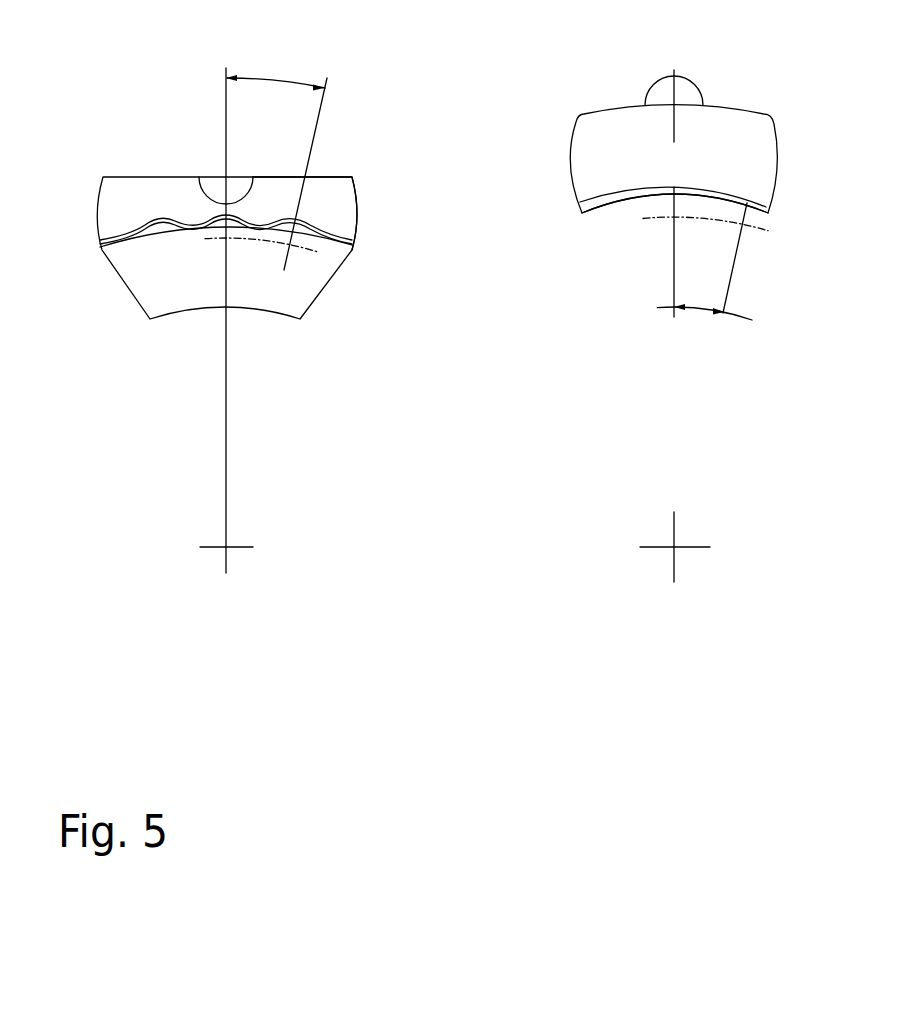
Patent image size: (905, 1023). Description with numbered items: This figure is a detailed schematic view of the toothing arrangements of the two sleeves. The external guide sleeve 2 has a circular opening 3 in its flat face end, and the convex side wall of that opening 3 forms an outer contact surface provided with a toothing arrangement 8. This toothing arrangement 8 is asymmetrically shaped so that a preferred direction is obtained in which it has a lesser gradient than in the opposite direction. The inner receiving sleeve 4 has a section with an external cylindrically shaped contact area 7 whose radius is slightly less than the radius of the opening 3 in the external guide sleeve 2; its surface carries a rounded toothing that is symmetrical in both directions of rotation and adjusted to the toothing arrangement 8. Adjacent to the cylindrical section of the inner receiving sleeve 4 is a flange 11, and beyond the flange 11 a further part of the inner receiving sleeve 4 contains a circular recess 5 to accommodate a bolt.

The external guide sleeve 2 is at (583, 250).
The circular opening 3 is at (697, 282).
The inner receiving sleeve 4 is at (108, 325).
The circular recess 5 is at (257, 345).
The external cylindrically shaped contact area 7 is at (147, 215).
The toothing arrangement 8 is at (730, 205).
The flange 11 is at (328, 197).